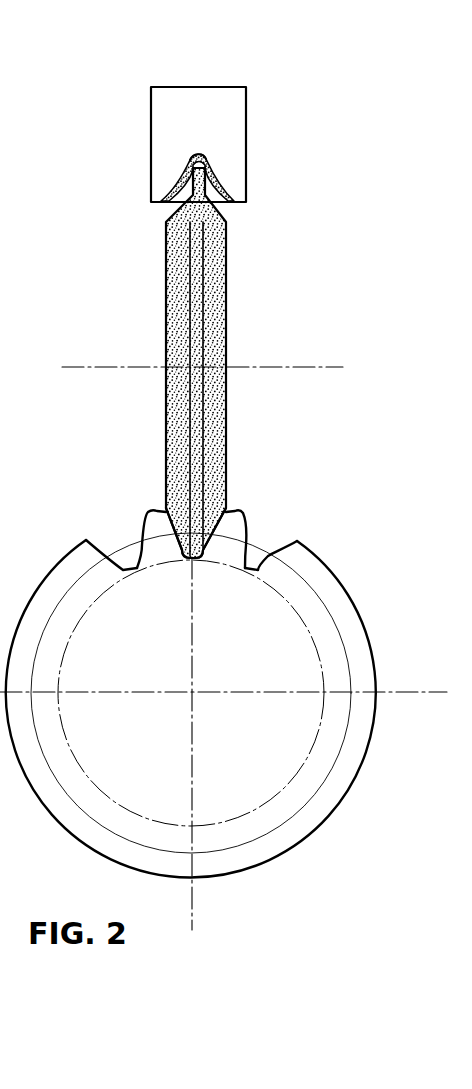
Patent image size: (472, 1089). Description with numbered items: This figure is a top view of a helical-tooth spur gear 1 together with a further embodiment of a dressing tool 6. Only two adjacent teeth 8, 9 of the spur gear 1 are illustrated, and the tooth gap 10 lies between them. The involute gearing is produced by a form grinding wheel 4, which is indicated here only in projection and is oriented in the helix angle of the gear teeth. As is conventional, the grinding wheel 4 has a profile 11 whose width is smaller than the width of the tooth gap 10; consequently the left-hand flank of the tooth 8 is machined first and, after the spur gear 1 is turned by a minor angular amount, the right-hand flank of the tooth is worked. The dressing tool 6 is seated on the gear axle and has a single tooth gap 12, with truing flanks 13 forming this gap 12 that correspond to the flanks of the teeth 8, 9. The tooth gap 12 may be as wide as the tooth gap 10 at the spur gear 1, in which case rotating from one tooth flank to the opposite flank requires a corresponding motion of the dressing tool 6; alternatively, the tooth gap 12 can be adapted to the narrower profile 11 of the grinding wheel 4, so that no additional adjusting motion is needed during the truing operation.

The spur gear 1 is at (362, 627).
The form grinding wheel 4 is at (227, 355).
The dressing tool 6 is at (224, 83).
The tooth 8 is at (232, 528).
The tooth 9 is at (162, 543).
The tooth gap 10 is at (177, 533).
The profile 11 is at (213, 242).
The tooth gap 12 is at (200, 152).
The truing flanks 13 is at (183, 180).